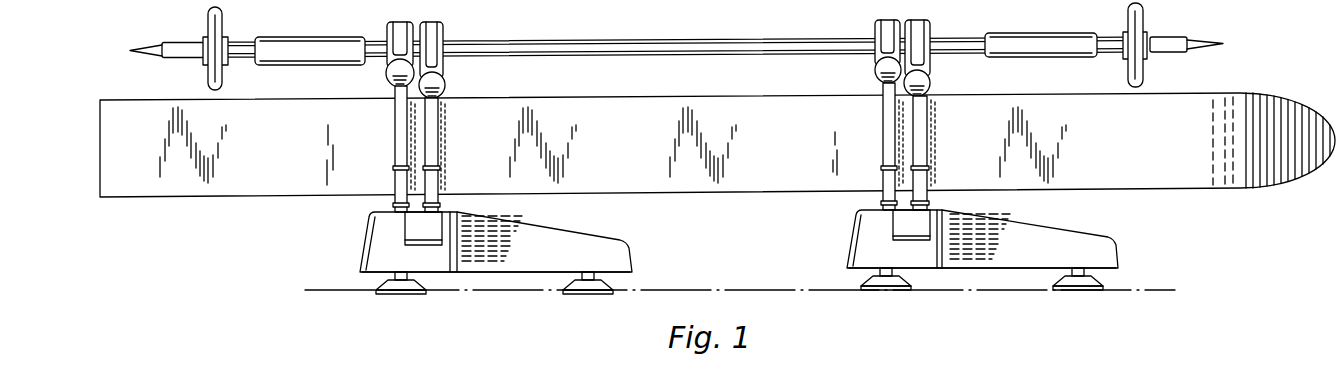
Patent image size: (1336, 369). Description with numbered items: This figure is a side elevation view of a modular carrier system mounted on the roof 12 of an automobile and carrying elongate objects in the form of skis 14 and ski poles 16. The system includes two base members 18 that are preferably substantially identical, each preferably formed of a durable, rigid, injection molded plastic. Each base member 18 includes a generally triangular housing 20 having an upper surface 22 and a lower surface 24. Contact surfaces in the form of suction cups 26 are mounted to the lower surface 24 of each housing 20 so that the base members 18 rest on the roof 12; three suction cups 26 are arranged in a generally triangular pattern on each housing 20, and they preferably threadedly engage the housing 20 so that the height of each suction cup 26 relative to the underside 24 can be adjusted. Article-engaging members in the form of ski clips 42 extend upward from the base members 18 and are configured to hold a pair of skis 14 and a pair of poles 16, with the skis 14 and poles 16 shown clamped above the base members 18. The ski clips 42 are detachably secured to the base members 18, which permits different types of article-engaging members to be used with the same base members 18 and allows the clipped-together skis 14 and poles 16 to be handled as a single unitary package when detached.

The roof 12 is at (1158, 287).
The skis 14 is at (1250, 97).
The ski poles 16 is at (178, 45).
The base member 18 is at (604, 229).
The housing 20 is at (369, 234).
The upper surface 22 is at (504, 223).
The lower surface 24 is at (478, 274).
The suction cups 26 is at (400, 285).
The ski clips 42 is at (438, 130).